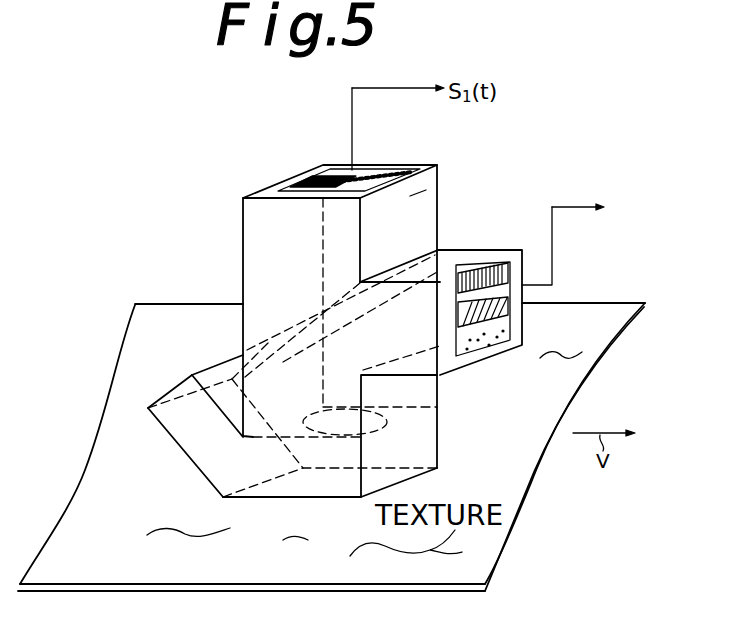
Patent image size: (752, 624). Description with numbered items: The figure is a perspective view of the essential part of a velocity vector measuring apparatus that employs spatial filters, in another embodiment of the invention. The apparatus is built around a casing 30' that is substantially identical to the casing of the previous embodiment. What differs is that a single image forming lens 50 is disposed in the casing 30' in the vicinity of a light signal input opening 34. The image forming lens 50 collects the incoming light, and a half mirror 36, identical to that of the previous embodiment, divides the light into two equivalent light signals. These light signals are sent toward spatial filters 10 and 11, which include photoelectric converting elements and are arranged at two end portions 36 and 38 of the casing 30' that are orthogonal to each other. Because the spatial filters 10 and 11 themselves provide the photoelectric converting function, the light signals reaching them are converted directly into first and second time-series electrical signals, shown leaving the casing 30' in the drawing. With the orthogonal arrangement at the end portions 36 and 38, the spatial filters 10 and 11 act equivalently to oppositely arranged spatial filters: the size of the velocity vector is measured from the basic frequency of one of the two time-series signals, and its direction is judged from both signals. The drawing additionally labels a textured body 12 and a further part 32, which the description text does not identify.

The spatial filter 10 is at (368, 167).
The spatial filter 11 is at (512, 292).
The textured web 12 is at (380, 577).
The casing 30' is at (474, 171).
The wedge shaped guide 32 is at (185, 377).
The light signal input opening 34 is at (308, 498).
The half mirror 36 is at (424, 165).
The end portion of the casing 38 is at (497, 268).
The image forming lens 50 is at (390, 422).